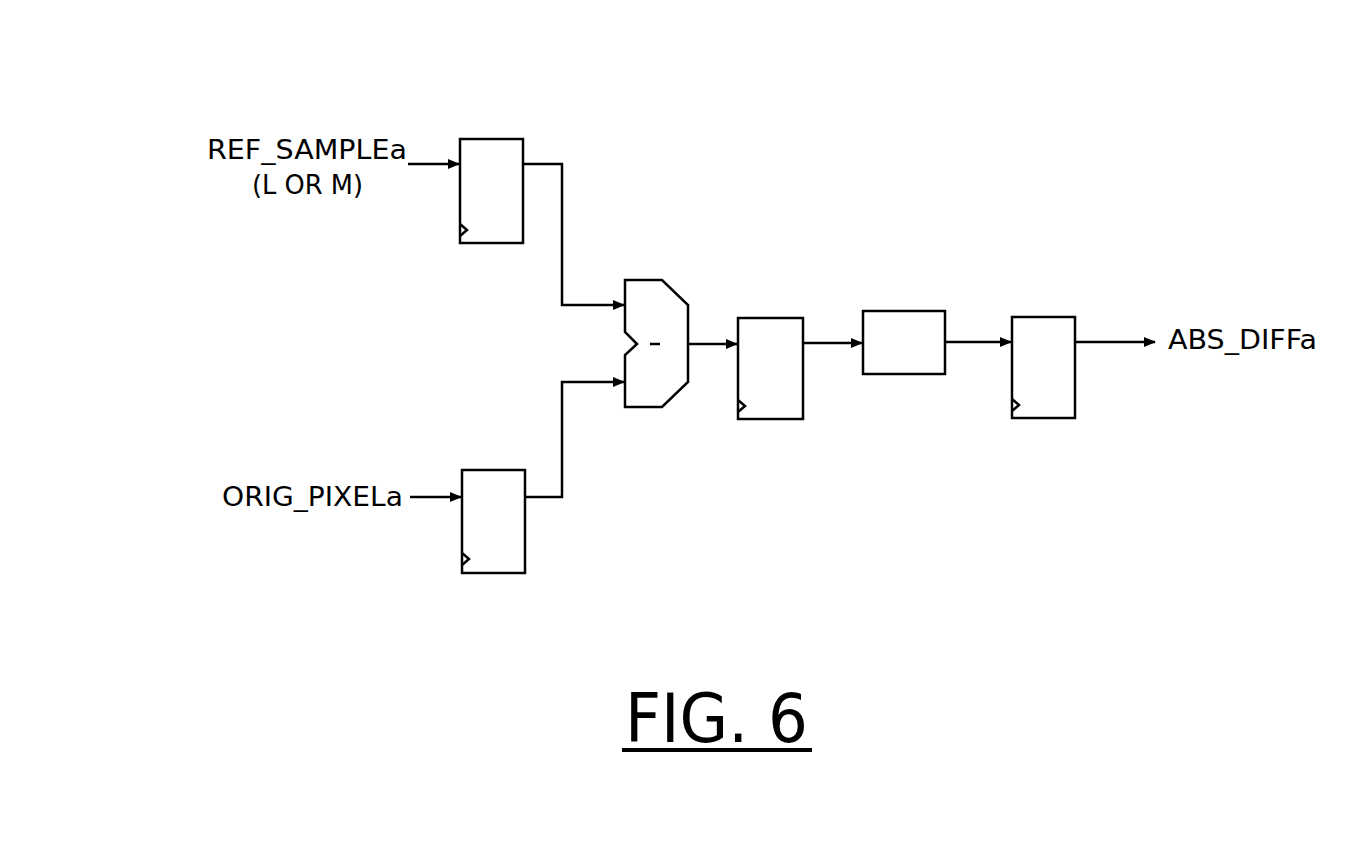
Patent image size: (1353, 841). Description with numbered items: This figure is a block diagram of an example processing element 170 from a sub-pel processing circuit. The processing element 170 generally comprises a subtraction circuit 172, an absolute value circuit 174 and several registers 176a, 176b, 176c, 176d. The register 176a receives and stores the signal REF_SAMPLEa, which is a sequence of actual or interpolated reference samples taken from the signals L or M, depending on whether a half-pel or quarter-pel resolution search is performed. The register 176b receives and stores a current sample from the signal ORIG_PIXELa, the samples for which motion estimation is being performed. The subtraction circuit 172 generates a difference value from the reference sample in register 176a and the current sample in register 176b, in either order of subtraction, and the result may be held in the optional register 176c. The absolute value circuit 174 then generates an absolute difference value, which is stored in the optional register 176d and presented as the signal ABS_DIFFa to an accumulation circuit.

The processing element 170 is at (208, 78).
The subtraction circuit 172 is at (655, 280).
The absolute value circuit 174 is at (918, 311).
The register 176a is at (503, 139).
The register 176b is at (503, 573).
The register 176c is at (777, 318).
The register 176d is at (1054, 317).